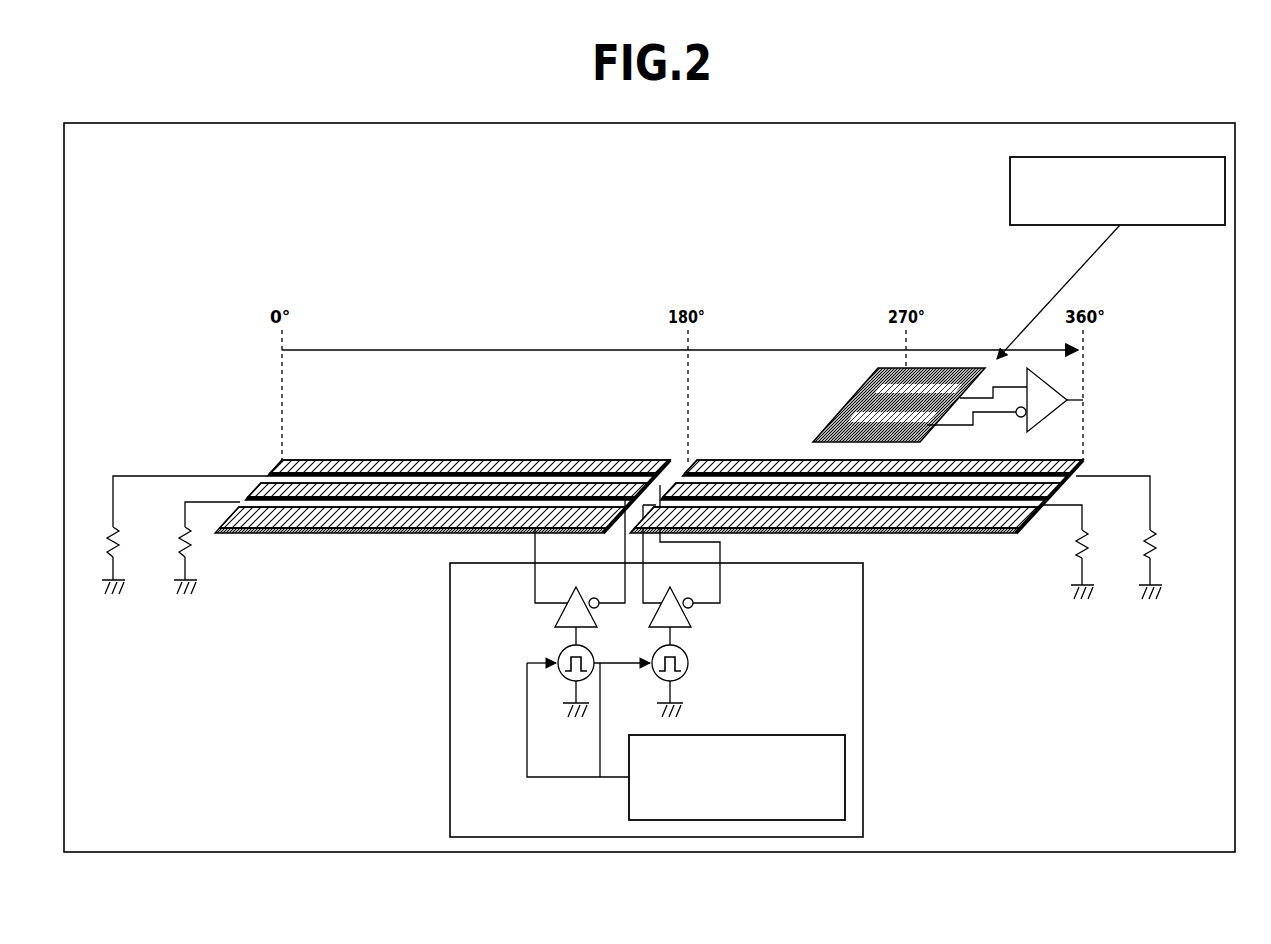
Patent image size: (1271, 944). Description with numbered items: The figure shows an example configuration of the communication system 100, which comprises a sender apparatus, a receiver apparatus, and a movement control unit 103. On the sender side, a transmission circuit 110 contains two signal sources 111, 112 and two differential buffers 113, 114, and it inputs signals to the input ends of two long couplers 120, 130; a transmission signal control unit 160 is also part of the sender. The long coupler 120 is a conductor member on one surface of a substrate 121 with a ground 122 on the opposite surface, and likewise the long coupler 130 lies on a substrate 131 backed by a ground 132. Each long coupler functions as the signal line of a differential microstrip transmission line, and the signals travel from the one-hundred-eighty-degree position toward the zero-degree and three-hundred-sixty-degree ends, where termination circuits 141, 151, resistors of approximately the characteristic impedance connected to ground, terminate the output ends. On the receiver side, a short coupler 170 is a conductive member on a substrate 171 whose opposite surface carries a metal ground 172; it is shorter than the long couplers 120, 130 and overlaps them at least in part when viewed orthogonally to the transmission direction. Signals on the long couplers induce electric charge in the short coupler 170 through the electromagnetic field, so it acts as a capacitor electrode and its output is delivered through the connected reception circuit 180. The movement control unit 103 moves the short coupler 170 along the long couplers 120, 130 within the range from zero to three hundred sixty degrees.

The communication system 100 is at (978, 123).
The movement control unit 103 is at (1140, 157).
The transmission circuit 110 is at (616, 700).
The signal source 111 is at (562, 673).
The signal source 112 is at (689, 664).
The differential buffer 113 is at (558, 618).
The differential buffer 114 is at (696, 620).
The long coupler 120 is at (442, 501).
The substrate 121 is at (365, 460).
The ground 122 is at (392, 535).
The long coupler 130 is at (856, 501).
The substrate 131 is at (745, 460).
The ground 132 is at (913, 532).
The termination circuit 141 is at (180, 560).
The termination circuit 151 is at (1147, 562).
The transmission signal control unit 160 is at (765, 735).
The short coupler 170 is at (908, 371).
The substrate 171 is at (832, 424).
The ground 172 is at (950, 378).
The reception circuit 180 is at (1052, 372).